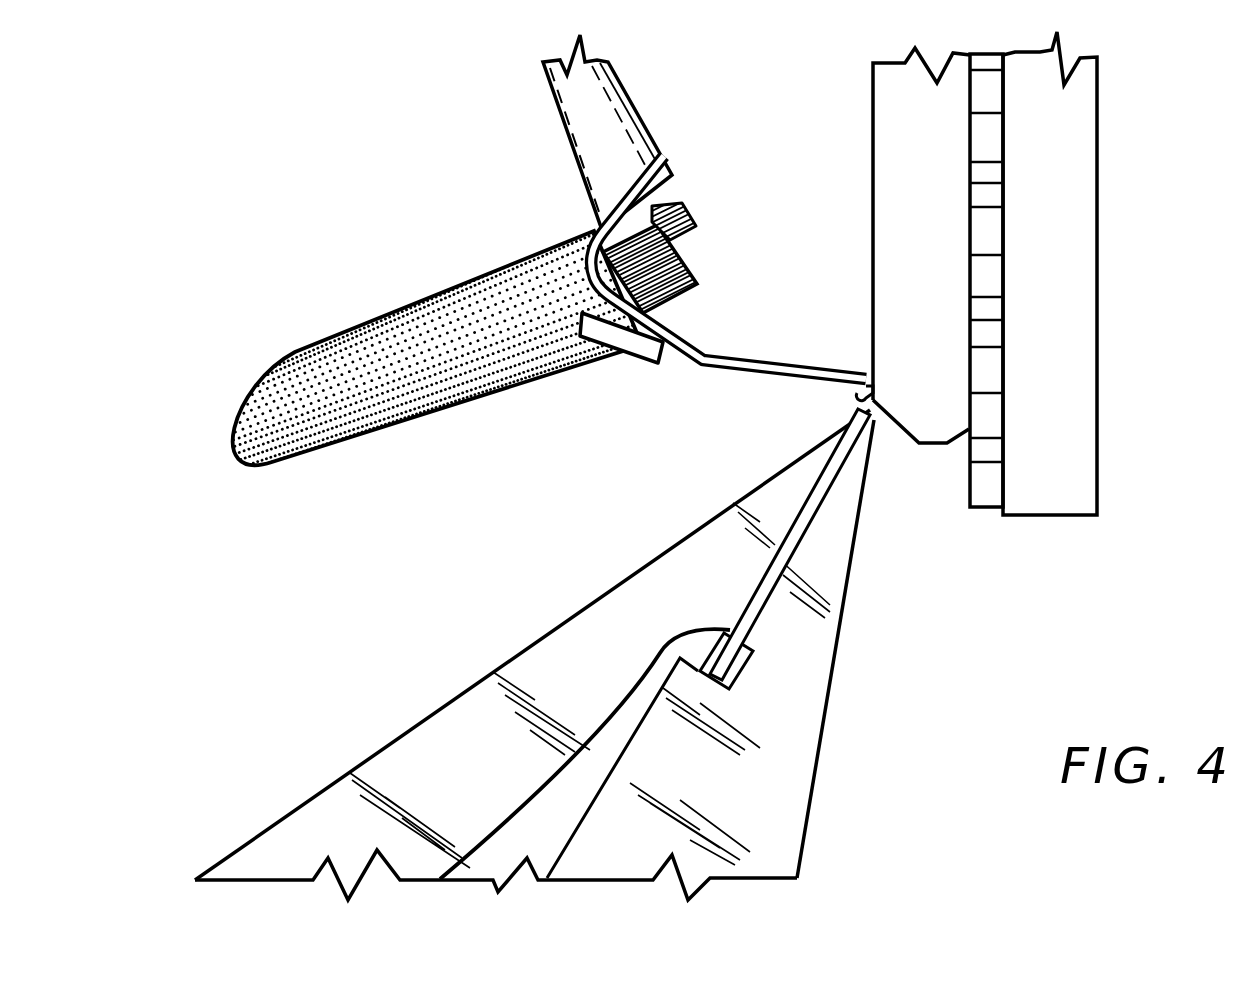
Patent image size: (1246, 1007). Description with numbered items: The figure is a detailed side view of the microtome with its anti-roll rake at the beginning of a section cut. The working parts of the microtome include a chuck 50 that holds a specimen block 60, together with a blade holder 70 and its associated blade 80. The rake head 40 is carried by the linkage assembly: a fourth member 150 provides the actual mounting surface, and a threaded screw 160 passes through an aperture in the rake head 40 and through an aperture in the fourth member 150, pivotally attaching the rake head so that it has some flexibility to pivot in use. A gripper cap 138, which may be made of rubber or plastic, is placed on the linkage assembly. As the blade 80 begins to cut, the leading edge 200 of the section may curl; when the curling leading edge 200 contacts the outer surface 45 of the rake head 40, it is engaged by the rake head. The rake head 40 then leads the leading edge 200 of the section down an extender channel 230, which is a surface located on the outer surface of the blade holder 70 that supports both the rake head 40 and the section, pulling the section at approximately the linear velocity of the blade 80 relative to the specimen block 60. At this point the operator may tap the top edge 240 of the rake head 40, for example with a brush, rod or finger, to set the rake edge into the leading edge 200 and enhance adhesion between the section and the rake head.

The rake head 40 is at (697, 365).
The outer surface 45 is at (786, 362).
The chuck 50 is at (1046, 516).
The specimen block 60 is at (929, 443).
The blade holder 70 is at (817, 768).
The blade 80 is at (742, 593).
The gripper section cap 138 is at (297, 375).
The fourth member 150 is at (693, 270).
The threaded screw 160 is at (692, 210).
The leading edge 200 is at (856, 392).
The extender channel 230 is at (381, 747).
The top edge 240 is at (640, 185).